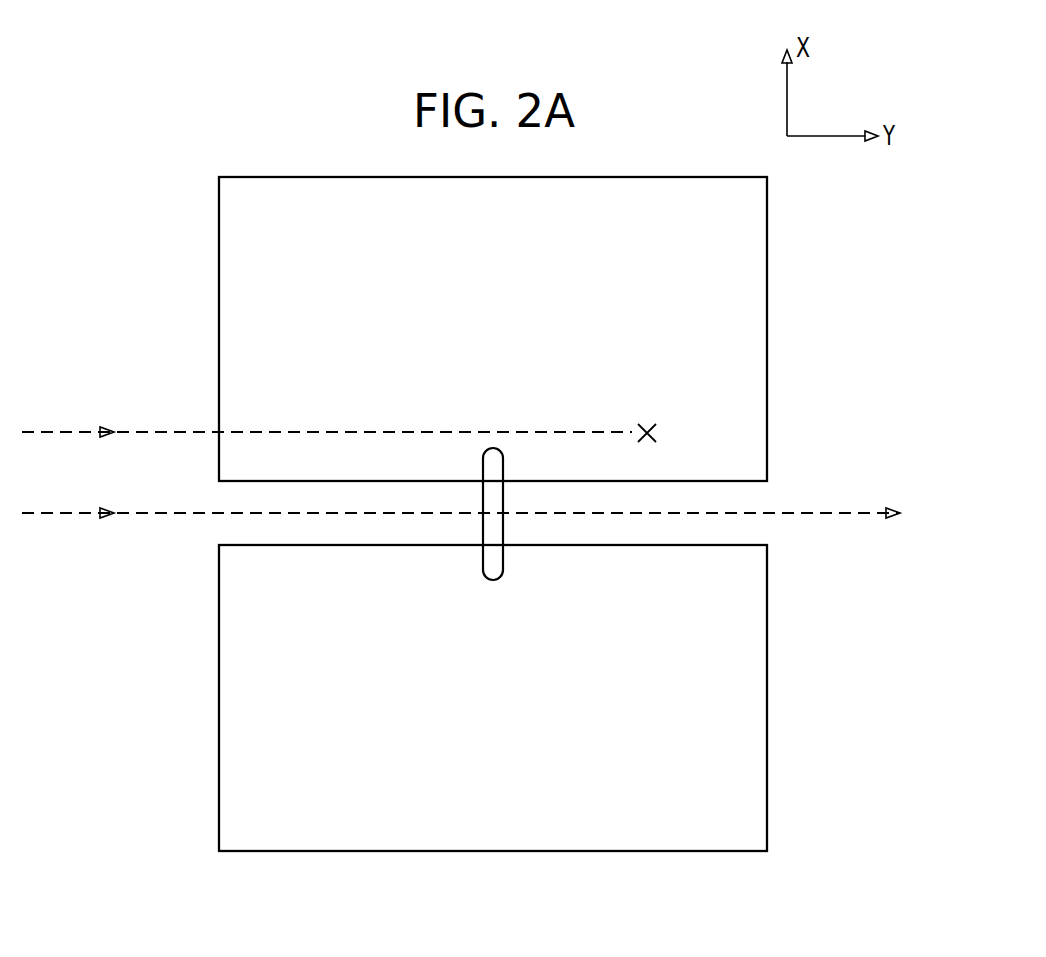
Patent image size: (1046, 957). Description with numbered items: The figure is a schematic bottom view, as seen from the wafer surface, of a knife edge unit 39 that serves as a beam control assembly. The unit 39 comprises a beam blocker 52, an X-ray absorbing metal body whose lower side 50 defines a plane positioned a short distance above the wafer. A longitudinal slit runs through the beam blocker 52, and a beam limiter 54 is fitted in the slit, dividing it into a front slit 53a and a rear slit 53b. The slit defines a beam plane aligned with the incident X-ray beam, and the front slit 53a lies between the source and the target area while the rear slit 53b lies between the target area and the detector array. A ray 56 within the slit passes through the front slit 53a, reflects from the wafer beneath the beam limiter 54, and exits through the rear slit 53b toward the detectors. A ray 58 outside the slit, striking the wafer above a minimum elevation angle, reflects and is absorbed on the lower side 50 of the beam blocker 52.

The knife edge unit 39 is at (187, 126).
The lower side 50 is at (507, 265).
The beam blocker 52 is at (218, 695).
The front slit 53a is at (245, 497).
The rear slit 53b is at (732, 530).
The beam limiter 54 is at (500, 523).
The ray 56 is at (168, 514).
The ray 58 is at (176, 430).